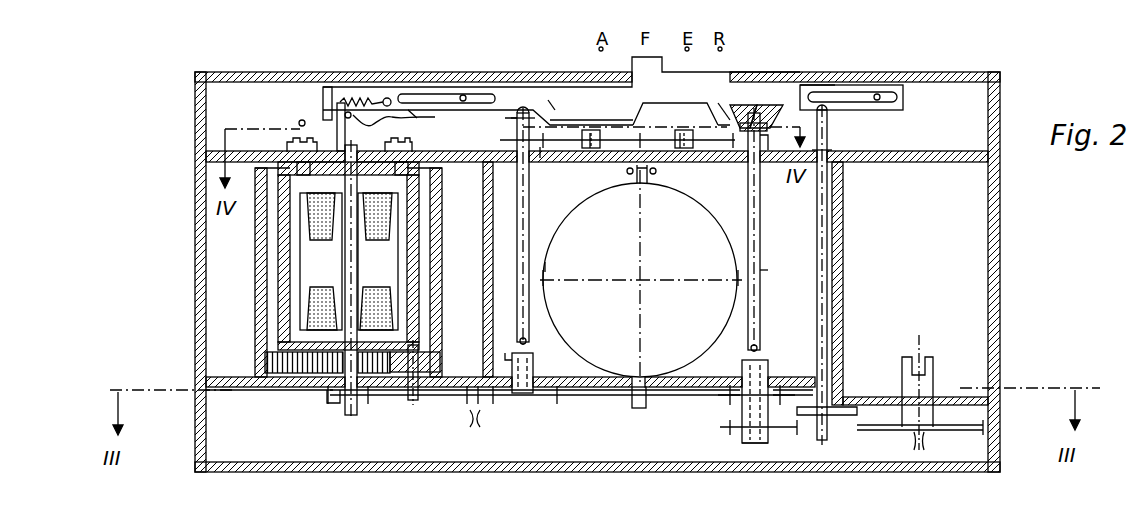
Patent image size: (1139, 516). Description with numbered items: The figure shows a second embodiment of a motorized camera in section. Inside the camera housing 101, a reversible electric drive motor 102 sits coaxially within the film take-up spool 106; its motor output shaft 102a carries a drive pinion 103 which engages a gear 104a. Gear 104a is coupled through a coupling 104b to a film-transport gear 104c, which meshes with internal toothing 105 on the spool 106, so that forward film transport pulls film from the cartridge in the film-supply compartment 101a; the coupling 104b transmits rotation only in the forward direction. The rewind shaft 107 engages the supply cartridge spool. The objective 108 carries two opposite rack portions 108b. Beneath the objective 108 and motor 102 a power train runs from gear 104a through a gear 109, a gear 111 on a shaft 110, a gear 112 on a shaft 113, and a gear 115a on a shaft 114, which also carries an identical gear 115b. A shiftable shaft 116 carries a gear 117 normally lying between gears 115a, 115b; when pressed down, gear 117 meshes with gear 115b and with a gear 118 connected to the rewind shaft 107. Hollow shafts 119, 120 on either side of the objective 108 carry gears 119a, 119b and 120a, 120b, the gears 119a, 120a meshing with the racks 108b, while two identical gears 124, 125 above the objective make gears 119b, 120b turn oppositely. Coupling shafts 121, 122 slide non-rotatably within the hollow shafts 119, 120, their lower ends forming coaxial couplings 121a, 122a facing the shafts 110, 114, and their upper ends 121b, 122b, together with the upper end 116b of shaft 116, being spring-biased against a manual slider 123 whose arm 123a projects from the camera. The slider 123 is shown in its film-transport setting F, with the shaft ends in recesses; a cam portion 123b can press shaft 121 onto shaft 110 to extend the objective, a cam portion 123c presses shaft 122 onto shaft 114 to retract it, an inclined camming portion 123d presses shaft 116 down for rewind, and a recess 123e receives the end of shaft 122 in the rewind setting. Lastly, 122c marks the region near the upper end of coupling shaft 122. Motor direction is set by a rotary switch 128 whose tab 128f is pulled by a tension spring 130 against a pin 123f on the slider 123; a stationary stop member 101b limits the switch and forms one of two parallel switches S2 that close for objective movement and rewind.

The camera housing 101 is at (1000, 266).
The film-supply compartment 101a is at (960, 305).
The stationary stop member 101b is at (544, 131).
The reversible electric drive motor 102 is at (300, 300).
The motor output shaft 102a is at (345, 408).
The motor drive pinion 103 is at (330, 398).
The gear 104a is at (450, 397).
The coupling 104b is at (416, 403).
The film-transport gear 104c is at (430, 357).
The internal toothing 105 is at (272, 358).
The film take-up spool 106 is at (462, 282).
The rewind shaft 107 is at (932, 372).
The objective 108 is at (717, 222).
The rack portions 108b is at (543, 275).
The gear 109 is at (488, 405).
The shaft 110 is at (535, 352).
The gear 111 is at (548, 401).
The gear 112 is at (588, 397).
The shaft 113 is at (646, 402).
The shaft 114 is at (757, 410).
The gear 115a is at (782, 385).
The gear 115b is at (783, 432).
The shiftable shaft 116 is at (828, 262).
The upper shaft end 116b is at (830, 128).
The gear 117 is at (840, 420).
The gear 118 is at (962, 432).
The hollow shaft 119 is at (483, 212).
The gear 119a is at (547, 266).
The gear 119b is at (541, 160).
The hollow shaft 120 is at (764, 244).
The gear 120a is at (762, 276).
The gear 120b is at (777, 158).
The coupling shaft 121 is at (530, 320).
The coaxial shaft coupling 121a is at (528, 342).
The upper shaft end 121b is at (523, 110).
The coupling shaft 122 is at (760, 318).
The coaxial shaft coupling 122a is at (748, 343).
The upper shaft end 122b is at (765, 118).
The cam 122c is at (752, 118).
The manual slider 123 is at (578, 87).
The arm 123a is at (665, 70).
The cam portion 123b is at (563, 97).
The cam portion 123c is at (716, 105).
The inclined camming portion 123d is at (825, 86).
The recess 123e is at (700, 110).
The pin 123f is at (378, 104).
The gear 124 is at (614, 168).
The gear 125 is at (712, 142).
The rotary switch 128 is at (323, 170).
The tab 128f is at (326, 87).
The tension spring 130 is at (365, 100).
The switch S2 is at (303, 113).